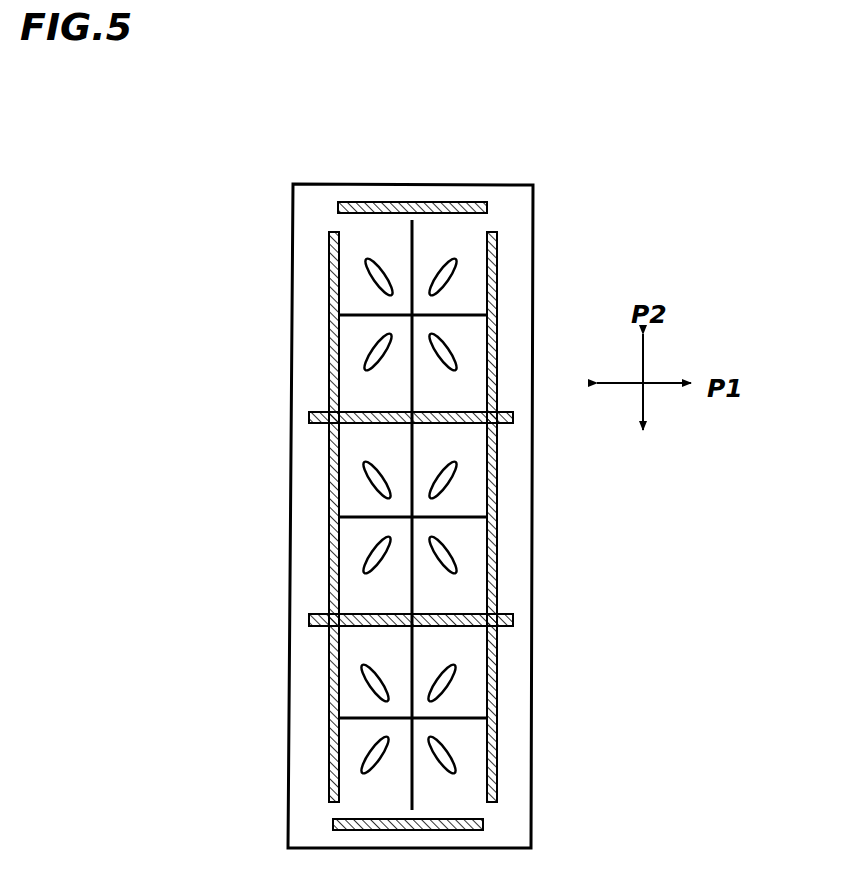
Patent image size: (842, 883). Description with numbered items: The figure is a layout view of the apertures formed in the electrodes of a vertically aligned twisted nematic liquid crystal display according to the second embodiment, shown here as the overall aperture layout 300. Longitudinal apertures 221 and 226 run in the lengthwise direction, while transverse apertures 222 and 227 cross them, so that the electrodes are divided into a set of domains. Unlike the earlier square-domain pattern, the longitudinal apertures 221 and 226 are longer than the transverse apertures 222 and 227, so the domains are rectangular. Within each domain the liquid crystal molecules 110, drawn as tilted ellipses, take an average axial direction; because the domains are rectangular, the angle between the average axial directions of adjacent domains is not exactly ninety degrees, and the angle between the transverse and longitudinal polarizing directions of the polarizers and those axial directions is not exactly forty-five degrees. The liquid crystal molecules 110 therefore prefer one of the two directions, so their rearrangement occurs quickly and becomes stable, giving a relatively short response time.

The liquid crystal display panel 300 is at (406, 471).
The liquid crystal molecules 110 is at (457, 262).
The longitudinal aperture 221 is at (497, 270).
The transverse aperture 222 is at (487, 425).
The longitudinal aperture 226 is at (413, 247).
The transverse aperture 227 is at (350, 313).